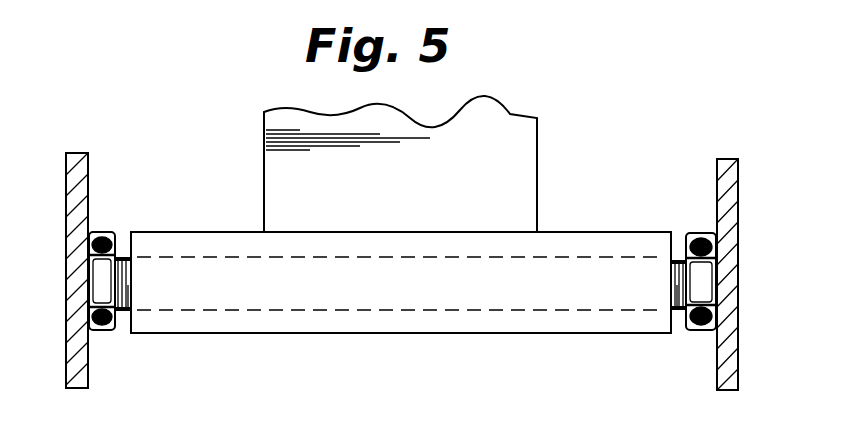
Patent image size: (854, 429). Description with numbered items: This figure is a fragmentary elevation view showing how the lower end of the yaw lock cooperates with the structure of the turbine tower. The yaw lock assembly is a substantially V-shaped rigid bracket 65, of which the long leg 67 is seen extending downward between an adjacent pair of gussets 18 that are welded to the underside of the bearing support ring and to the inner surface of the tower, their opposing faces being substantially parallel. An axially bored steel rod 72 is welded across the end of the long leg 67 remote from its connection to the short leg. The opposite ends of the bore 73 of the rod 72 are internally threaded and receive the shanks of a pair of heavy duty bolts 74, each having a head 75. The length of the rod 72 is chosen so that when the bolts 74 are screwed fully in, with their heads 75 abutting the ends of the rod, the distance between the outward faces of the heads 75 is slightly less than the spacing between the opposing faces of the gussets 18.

The gussets 18 is at (88, 172).
The V-shaped rigid bracket 65 is at (540, 106).
The long leg 67 is at (537, 157).
The axially bored steel rod 72 is at (581, 232).
The bore 73 is at (480, 312).
The bolts 74 is at (124, 312).
The heads 75 is at (118, 236).